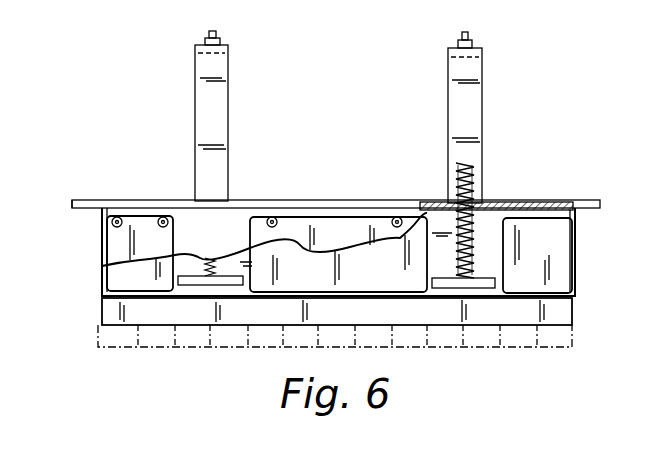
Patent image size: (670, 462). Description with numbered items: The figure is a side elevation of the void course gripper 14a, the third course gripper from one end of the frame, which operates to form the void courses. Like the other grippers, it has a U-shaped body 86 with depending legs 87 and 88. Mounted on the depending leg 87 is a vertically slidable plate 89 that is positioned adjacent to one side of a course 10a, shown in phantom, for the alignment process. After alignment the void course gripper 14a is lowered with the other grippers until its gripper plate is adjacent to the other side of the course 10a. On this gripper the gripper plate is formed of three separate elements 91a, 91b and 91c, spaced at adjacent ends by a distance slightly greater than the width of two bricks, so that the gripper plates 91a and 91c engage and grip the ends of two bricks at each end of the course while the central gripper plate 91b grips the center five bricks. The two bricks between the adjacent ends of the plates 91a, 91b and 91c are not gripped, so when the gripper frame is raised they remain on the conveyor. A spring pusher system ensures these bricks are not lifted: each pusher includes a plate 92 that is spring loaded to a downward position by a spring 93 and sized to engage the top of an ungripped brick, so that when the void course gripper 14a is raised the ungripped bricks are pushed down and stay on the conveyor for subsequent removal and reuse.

The U-shaped body 86 is at (90, 203).
The depending leg 87 is at (440, 232).
The depending leg 88 is at (230, 225).
The vertically slidable plate 89 is at (565, 316).
The course 10a is at (548, 348).
The void course gripper 14a is at (355, 205).
The gripper plate element 91a is at (553, 261).
The central gripper plate 91b is at (345, 285).
The gripper plate element 91c is at (140, 276).
The plate 92 is at (232, 286).
The spring 93 is at (470, 235).